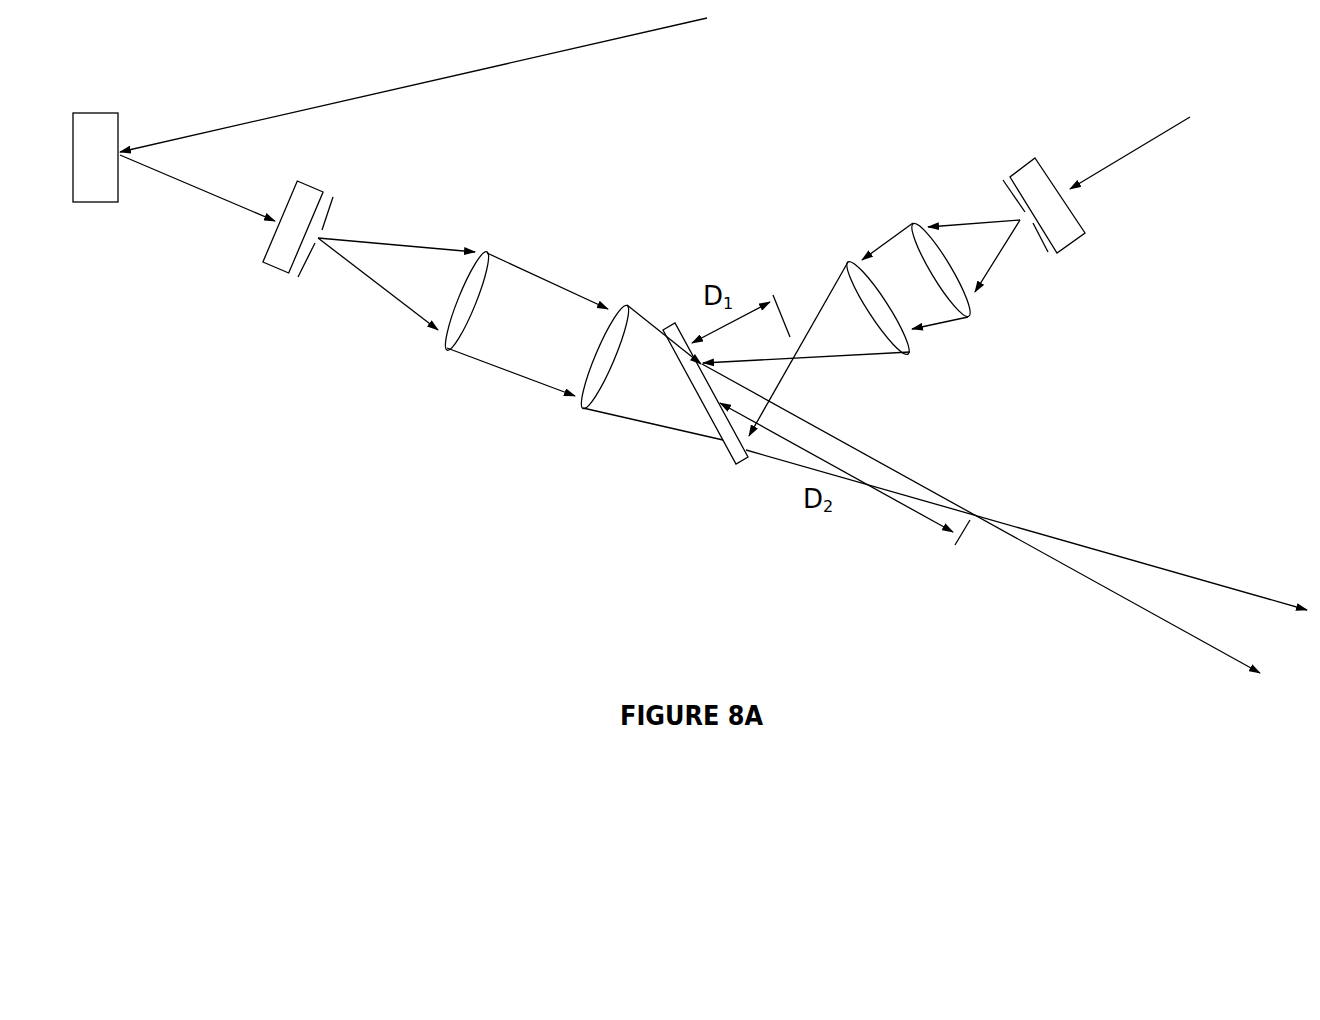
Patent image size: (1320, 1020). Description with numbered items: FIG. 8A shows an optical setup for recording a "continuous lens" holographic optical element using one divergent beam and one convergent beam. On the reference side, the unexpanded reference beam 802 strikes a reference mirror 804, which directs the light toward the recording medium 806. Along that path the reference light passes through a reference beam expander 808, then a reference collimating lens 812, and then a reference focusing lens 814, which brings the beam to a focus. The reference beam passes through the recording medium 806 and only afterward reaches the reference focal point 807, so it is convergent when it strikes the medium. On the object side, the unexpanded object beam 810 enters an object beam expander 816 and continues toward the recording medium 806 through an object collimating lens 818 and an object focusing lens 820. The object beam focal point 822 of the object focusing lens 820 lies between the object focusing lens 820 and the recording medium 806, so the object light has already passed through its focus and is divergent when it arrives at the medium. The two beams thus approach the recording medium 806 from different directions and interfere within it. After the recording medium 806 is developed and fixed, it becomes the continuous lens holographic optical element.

The unexpanded reference beam 802 is at (627, 42).
The reference mirror 804 is at (115, 113).
The recording medium 806 is at (743, 457).
The reference focal point 807 is at (978, 518).
The reference beam expander 808 is at (263, 257).
The unexpanded object beam 810 is at (1177, 123).
The reference collimating lens 812 is at (463, 333).
The reference focusing lens 814 is at (603, 380).
The object beam expander 816 is at (1075, 238).
The object collimating lens 818 is at (947, 265).
The object focusing lens 820 is at (880, 307).
The object beam focal point 822 is at (807, 355).